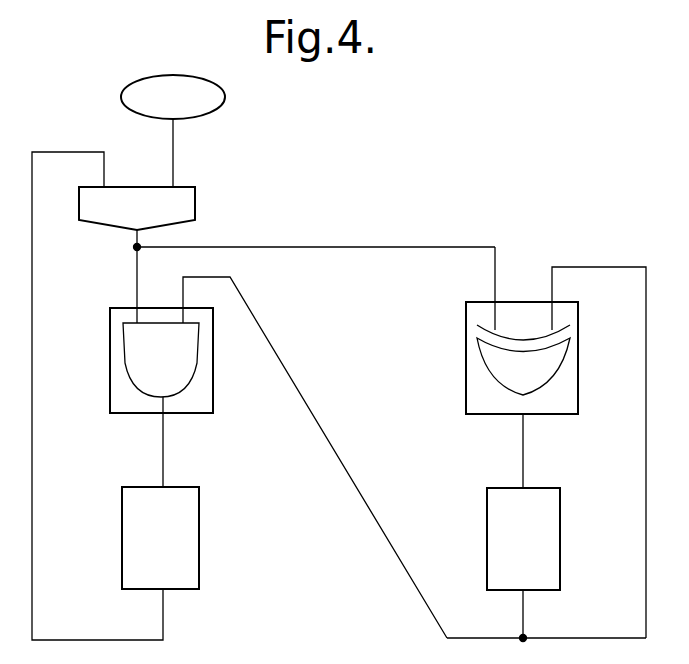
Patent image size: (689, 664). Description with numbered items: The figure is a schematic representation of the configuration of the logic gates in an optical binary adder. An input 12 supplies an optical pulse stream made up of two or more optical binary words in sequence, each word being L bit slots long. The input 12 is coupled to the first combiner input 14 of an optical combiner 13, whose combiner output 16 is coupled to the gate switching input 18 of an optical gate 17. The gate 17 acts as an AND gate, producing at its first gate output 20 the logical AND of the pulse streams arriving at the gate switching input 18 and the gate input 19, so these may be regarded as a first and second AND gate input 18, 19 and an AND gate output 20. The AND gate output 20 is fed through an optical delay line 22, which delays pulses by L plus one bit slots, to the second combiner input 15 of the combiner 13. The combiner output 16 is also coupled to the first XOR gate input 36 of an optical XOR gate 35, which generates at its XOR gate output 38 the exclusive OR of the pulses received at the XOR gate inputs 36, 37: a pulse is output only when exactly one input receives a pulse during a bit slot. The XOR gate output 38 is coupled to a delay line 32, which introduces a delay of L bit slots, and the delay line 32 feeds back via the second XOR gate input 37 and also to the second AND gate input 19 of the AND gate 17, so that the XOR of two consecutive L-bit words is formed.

The input 12 is at (194, 117).
The optical combiner 13 is at (196, 213).
The first combiner input 14 is at (174, 183).
The second combiner input 15 is at (104, 183).
The combiner output 16 is at (133, 233).
The optical gate 17 is at (214, 364).
The gate switching input 18 is at (136, 305).
The gate input 19 is at (183, 308).
The first gate output 20 is at (164, 418).
The optical delay line 22 is at (200, 523).
The delay line 32 is at (561, 527).
The optical XOR gate 35 is at (579, 353).
The first XOR gate input 36 is at (493, 300).
The second XOR gate input 37 is at (553, 298).
The XOR gate output 38 is at (524, 418).